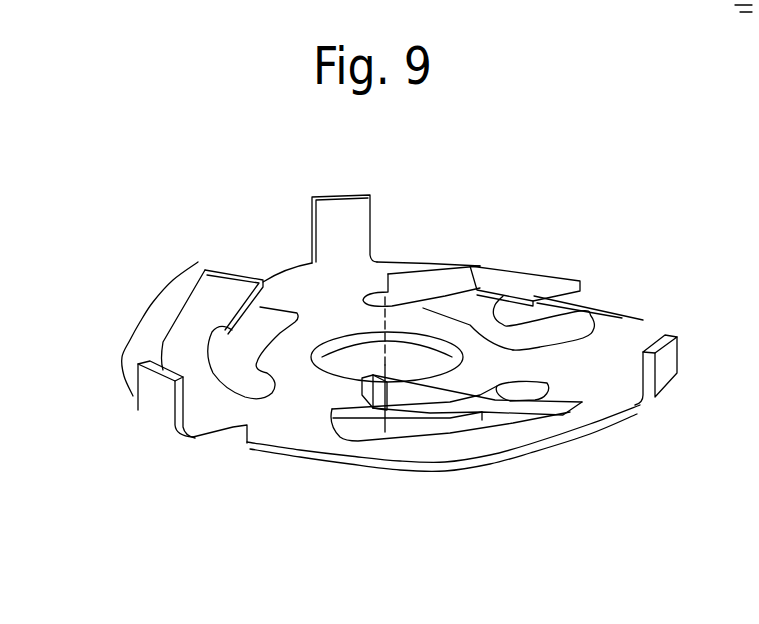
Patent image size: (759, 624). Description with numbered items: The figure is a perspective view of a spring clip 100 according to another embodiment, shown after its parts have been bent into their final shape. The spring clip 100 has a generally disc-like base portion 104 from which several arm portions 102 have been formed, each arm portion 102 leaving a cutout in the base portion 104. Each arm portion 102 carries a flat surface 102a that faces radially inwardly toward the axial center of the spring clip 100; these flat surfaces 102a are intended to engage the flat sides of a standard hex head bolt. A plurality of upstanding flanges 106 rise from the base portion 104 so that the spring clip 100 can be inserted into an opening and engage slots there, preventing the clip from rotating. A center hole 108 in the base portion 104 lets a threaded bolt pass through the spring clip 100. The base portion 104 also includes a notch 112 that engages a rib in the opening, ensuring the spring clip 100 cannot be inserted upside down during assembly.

The spring clip 100 is at (199, 190).
The arm portions 102 is at (210, 312).
The flat surface 102a is at (258, 305).
The base portion 104 is at (303, 408).
The upstanding flanges 106 is at (350, 212).
The center hole 108 is at (352, 340).
The notch 112 is at (230, 427).